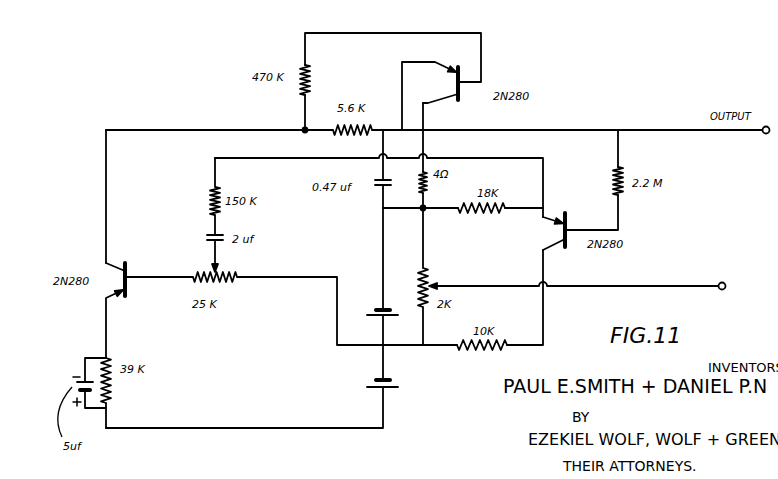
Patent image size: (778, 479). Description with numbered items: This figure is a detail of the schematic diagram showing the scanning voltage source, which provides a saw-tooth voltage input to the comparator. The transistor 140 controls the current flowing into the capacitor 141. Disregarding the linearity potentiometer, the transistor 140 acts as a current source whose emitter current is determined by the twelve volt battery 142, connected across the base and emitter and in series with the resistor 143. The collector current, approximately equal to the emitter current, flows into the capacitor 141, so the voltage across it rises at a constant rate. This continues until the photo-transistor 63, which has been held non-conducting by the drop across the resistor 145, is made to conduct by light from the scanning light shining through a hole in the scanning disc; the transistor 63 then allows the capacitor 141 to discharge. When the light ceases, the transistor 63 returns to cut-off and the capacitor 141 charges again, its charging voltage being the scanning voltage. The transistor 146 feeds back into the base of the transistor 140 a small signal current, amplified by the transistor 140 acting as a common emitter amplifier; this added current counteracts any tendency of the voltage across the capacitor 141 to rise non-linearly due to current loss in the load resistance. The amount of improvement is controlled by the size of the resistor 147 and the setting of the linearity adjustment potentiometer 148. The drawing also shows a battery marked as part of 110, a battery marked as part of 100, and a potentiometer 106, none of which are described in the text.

The photo-transistor 63 is at (487, 80).
The resistor 145 is at (383, 110).
The resistor 147 is at (203, 205).
The capacitor 141 is at (378, 193).
The transistor 140 is at (128, 275).
The linearity adjustment potentiometer 148 is at (235, 289).
The resistor 143 is at (113, 385).
The potentiometer (2K) 106 is at (439, 284).
The battery (part of 110) 110 is at (393, 314).
The battery 142 is at (400, 385).
The power supply 100 is at (424, 397).
The transistor 146 is at (568, 250).